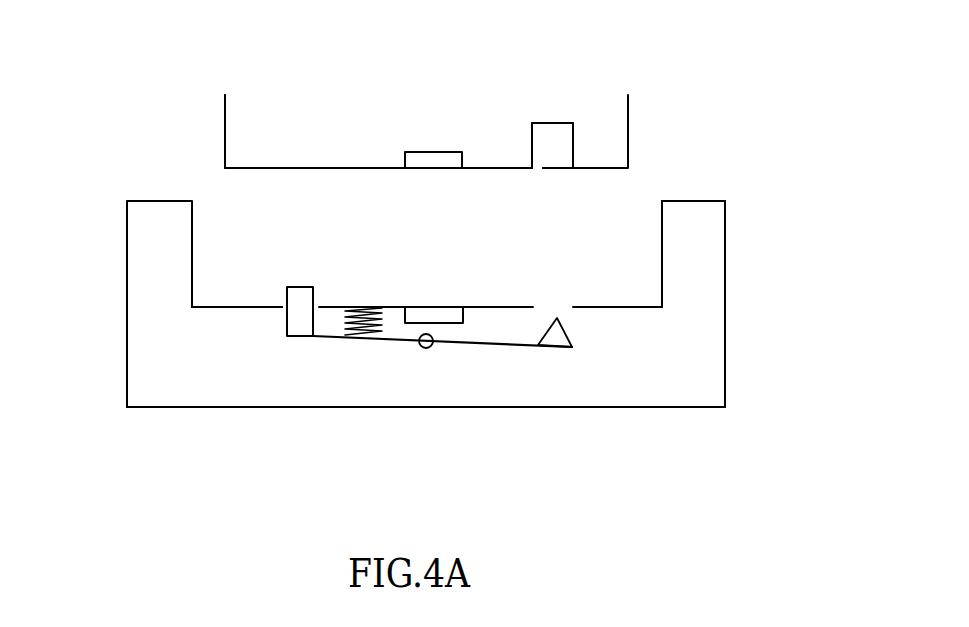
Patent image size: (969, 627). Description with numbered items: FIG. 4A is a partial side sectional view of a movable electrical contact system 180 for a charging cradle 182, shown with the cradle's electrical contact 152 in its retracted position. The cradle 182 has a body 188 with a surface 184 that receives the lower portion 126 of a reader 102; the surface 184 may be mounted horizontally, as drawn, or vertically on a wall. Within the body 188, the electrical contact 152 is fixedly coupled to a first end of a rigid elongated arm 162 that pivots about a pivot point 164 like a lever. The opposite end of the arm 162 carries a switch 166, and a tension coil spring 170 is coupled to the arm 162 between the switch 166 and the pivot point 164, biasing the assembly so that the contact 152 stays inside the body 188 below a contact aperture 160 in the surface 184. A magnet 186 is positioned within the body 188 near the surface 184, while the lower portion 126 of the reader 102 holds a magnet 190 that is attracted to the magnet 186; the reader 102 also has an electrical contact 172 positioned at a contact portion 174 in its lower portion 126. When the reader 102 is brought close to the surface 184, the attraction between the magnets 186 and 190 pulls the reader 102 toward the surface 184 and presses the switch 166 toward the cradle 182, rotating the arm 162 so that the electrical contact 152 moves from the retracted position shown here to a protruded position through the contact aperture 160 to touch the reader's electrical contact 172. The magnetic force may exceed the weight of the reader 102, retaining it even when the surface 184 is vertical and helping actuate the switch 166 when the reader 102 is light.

The reader 102 is at (687, 95).
The lower portion of the reader 126 is at (293, 168).
The magnet 190 is at (433, 158).
The contact portion 174 is at (553, 123).
The electrical contact of the reader 172 is at (558, 167).
The contact aperture 160 is at (601, 250).
The charging cradle 182 is at (773, 312).
The surface 184 is at (235, 307).
The magnet 186 is at (433, 312).
The body of the cradle 188 is at (630, 408).
The movable electrical contact system 180 is at (313, 362).
The switch 166 is at (292, 318).
The tension coil spring 170 is at (358, 337).
The elongated arm 162 is at (507, 347).
The pivot point 164 is at (426, 348).
The electrical contact 152 is at (555, 337).